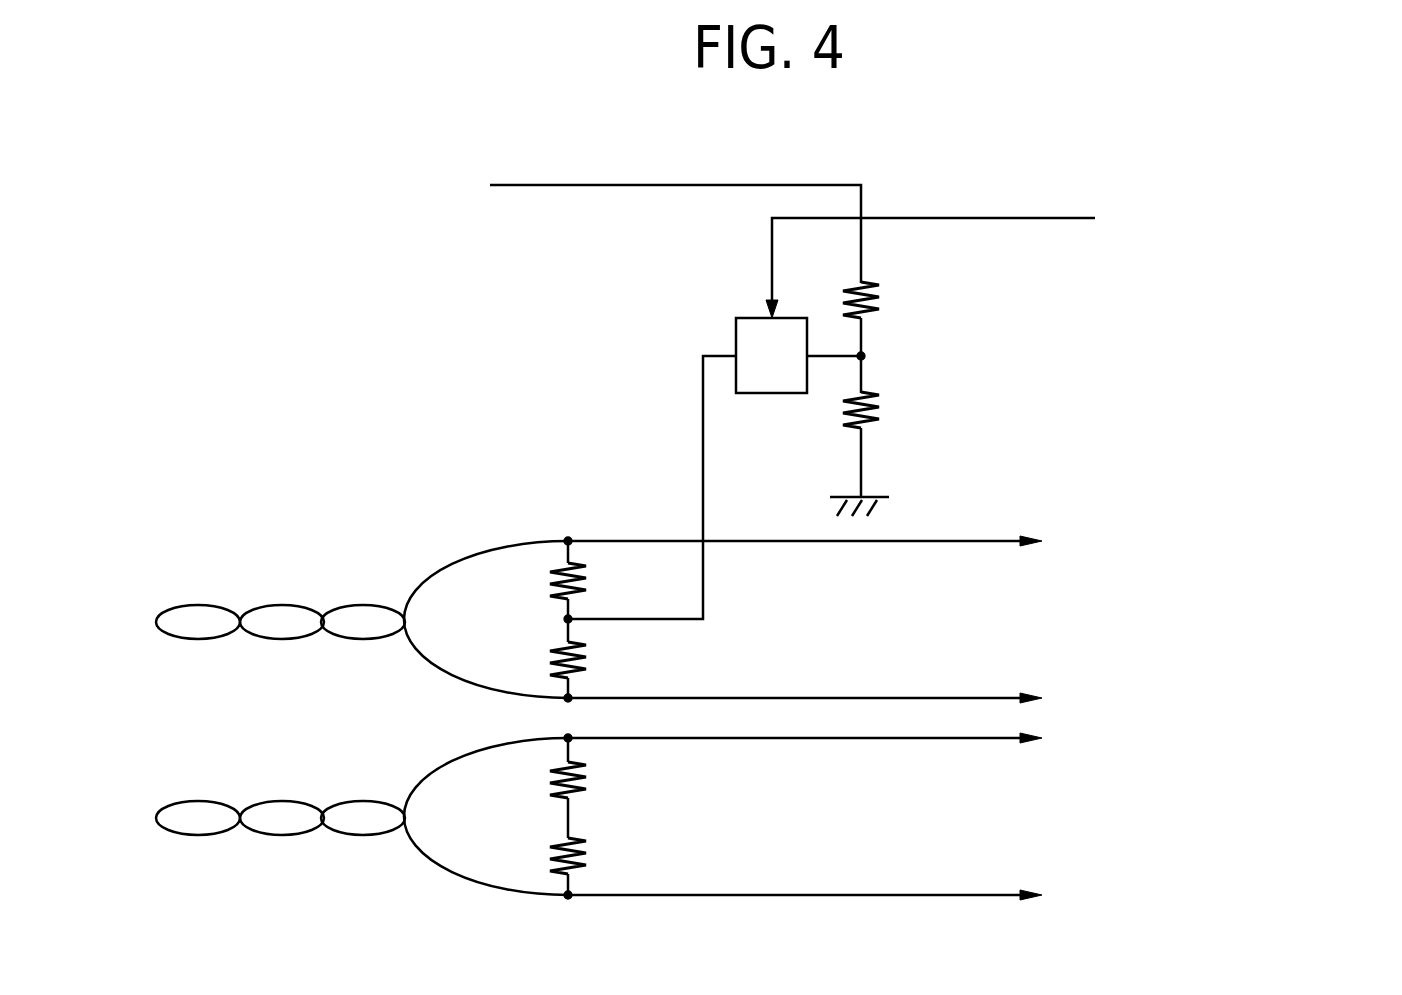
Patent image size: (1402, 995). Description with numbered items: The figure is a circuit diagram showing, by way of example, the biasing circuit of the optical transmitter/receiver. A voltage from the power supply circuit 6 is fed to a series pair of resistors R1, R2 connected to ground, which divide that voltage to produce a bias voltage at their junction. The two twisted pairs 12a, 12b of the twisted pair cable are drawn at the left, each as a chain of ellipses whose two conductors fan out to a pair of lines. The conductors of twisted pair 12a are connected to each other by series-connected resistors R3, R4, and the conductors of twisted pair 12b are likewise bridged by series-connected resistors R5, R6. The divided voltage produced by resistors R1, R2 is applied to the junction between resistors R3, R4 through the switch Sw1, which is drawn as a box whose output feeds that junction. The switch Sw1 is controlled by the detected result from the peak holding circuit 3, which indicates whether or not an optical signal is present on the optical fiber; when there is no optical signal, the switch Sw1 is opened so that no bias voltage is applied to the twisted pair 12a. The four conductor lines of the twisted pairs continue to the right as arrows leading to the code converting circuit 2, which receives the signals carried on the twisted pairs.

The power supply circuit 6 is at (528, 227).
The peak holding circuit 3 is at (1078, 259).
The code converting circuit 2 is at (880, 718).
The switch Sw1 is at (714, 468).
The resistor R1 is at (881, 319).
The resistor R2 is at (881, 426).
The resistor R3 is at (589, 580).
The resistor R4 is at (589, 658).
The resistor R5 is at (589, 788).
The resistor R6 is at (589, 866).
The twisted pair 12a is at (363, 801).
The twisted pair 12b is at (363, 605).